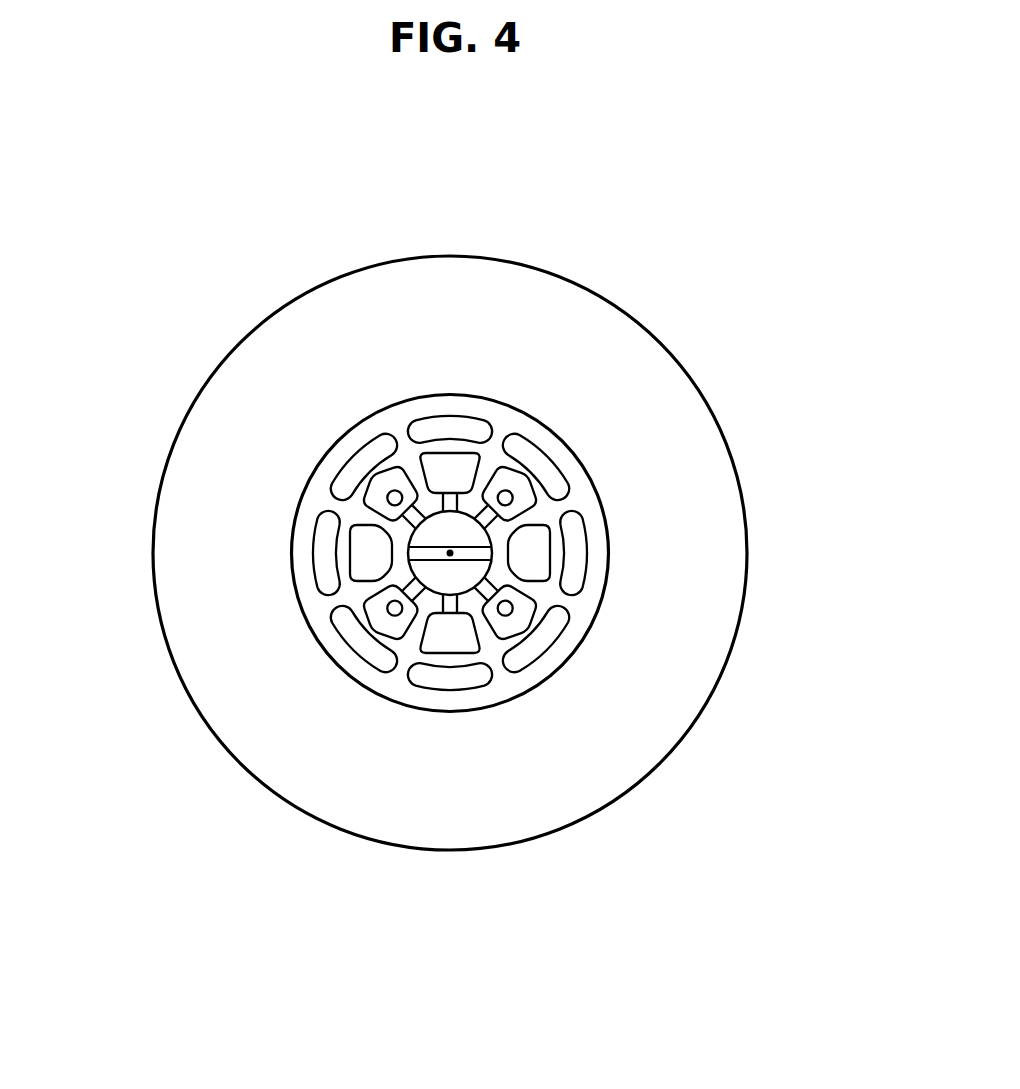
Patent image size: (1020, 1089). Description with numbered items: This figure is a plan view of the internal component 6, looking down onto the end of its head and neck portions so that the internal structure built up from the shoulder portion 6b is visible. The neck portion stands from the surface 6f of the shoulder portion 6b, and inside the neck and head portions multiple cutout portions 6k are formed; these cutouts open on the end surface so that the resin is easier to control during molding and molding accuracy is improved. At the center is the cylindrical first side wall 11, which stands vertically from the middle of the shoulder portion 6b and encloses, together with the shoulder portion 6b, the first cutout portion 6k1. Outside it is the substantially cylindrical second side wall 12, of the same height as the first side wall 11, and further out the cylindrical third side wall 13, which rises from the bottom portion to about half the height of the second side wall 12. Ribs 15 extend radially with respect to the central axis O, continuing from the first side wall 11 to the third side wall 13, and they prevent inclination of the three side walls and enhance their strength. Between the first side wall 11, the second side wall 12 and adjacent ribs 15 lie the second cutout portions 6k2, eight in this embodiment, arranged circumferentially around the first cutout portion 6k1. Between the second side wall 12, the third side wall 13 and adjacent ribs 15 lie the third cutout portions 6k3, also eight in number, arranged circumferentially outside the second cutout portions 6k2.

The internal component 6 is at (727, 212).
The shoulder portion 6b is at (703, 388).
The surface of the shoulder portion 6f is at (702, 478).
The cutout portions 6k is at (396, 568).
The first cutout portion 6k1 is at (420, 547).
The second cutout portions 6k2 is at (493, 468).
The third cutout portions 6k3 is at (552, 447).
The first side wall 11 is at (495, 567).
The second side wall 12 is at (523, 635).
The third side wall 13 is at (543, 680).
The ribs 15 is at (425, 477).
The central axis O is at (450, 553).